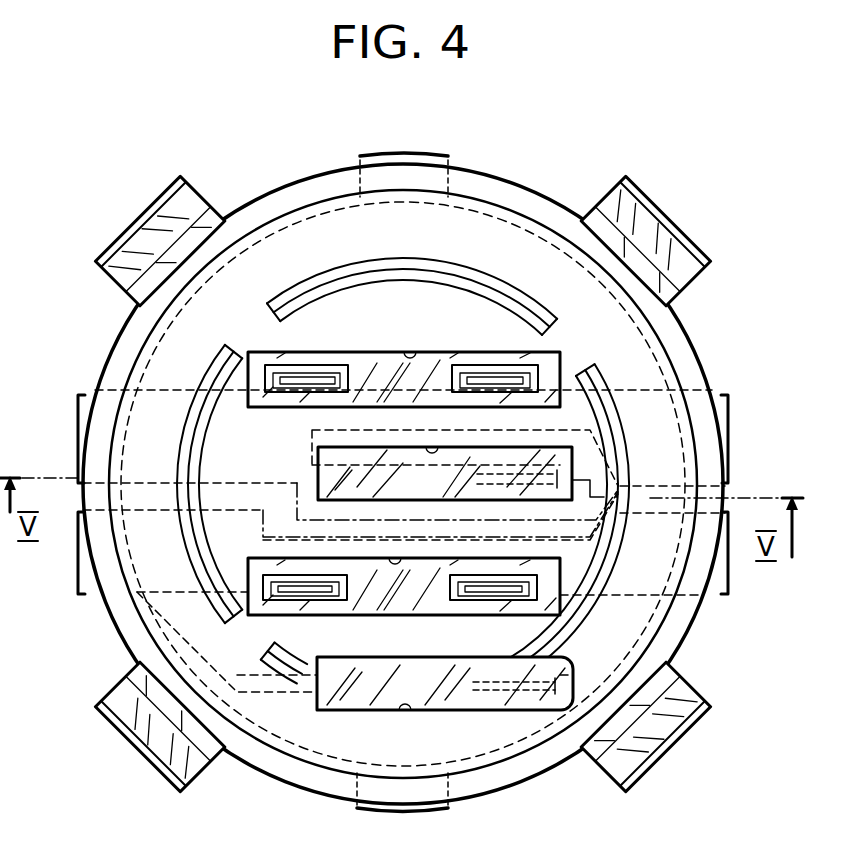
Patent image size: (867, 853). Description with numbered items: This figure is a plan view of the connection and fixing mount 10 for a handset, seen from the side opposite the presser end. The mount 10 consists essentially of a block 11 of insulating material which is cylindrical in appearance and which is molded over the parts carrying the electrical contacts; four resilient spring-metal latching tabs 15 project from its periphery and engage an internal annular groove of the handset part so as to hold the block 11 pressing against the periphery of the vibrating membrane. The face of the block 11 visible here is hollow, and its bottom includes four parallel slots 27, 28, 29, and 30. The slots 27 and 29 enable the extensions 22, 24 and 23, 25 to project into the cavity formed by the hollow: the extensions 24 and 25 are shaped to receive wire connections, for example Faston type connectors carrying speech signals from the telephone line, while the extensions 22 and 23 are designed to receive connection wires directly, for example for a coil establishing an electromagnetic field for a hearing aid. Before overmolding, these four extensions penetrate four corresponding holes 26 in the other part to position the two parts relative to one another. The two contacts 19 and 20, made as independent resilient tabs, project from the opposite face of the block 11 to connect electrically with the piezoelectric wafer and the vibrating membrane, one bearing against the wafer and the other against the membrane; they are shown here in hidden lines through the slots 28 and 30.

The mount 10 is at (271, 163).
The block 11 is at (494, 185).
The latching tabs 15 is at (158, 229).
The contact 19 is at (478, 697).
The contact 20 is at (483, 467).
The extension 22 is at (297, 376).
The extension 23 is at (318, 601).
The extension 24 is at (497, 376).
The extension 25 is at (505, 599).
The holes 26 is at (265, 350).
The slot 27 is at (410, 350).
The slot 28 is at (430, 445).
The slot 29 is at (395, 556).
The slot 30 is at (405, 714).